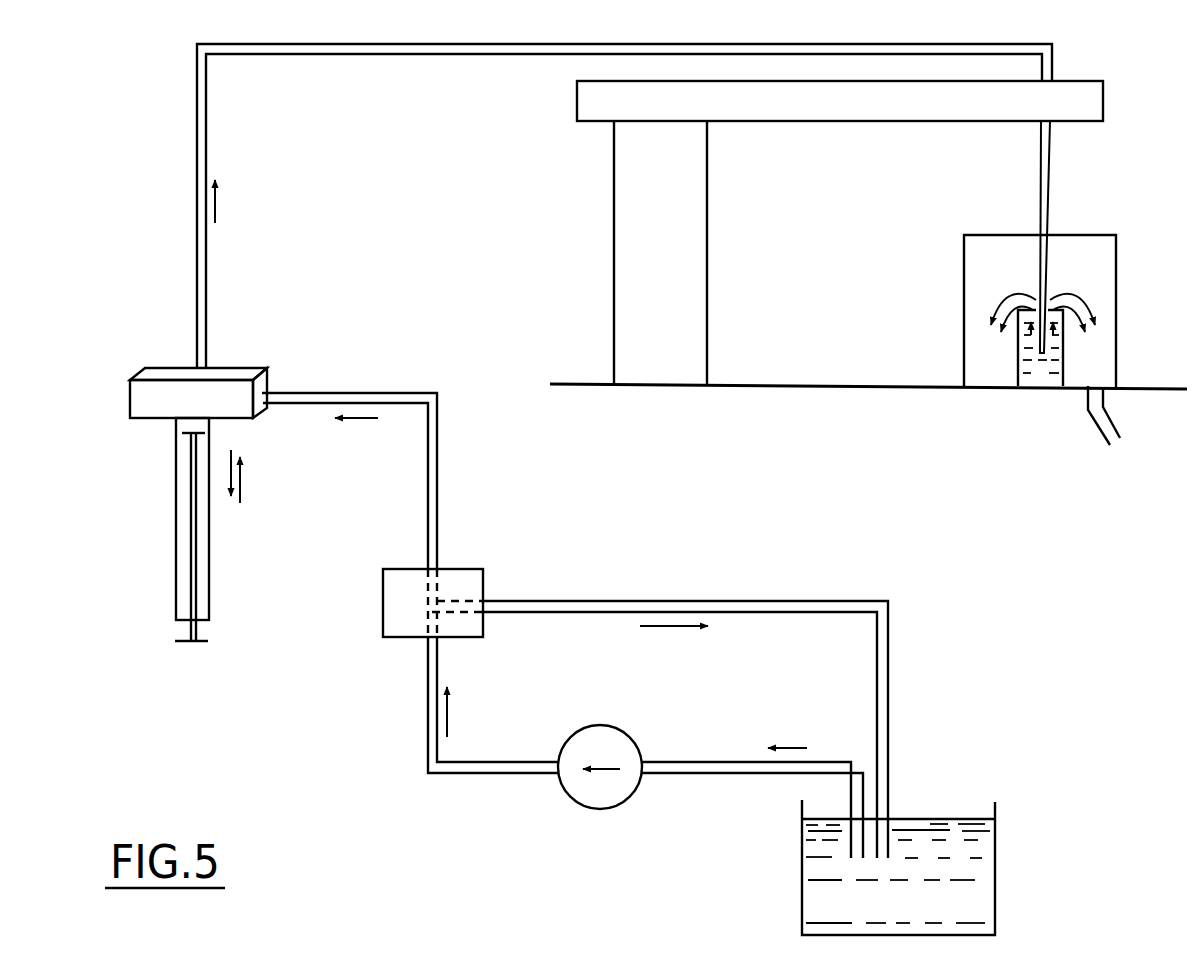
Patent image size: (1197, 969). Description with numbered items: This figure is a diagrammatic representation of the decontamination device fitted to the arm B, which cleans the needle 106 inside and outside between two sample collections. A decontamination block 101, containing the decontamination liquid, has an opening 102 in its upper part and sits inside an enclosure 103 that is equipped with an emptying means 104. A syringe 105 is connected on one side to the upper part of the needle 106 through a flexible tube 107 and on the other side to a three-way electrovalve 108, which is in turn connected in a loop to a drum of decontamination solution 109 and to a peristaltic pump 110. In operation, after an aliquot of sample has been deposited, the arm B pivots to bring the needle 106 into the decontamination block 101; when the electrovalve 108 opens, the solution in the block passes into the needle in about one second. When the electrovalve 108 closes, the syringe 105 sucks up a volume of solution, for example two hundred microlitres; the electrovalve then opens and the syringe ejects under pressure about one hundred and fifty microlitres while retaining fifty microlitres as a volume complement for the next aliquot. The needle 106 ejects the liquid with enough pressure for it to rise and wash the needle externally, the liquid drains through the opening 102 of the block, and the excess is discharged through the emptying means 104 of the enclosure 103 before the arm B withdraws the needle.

The decontamination block 101 is at (1018, 372).
The opening 102 is at (1063, 335).
The enclosure 103 is at (964, 265).
The emptying means 104 is at (1095, 432).
The syringe 105 is at (176, 568).
The needle 106 is at (1048, 184).
The flexible tube 107 is at (384, 52).
The three-way electrovalve 108 is at (472, 567).
The drum of decontamination solution 109 is at (995, 862).
The peristaltic pump 110 is at (600, 810).
The arm B is at (578, 97).